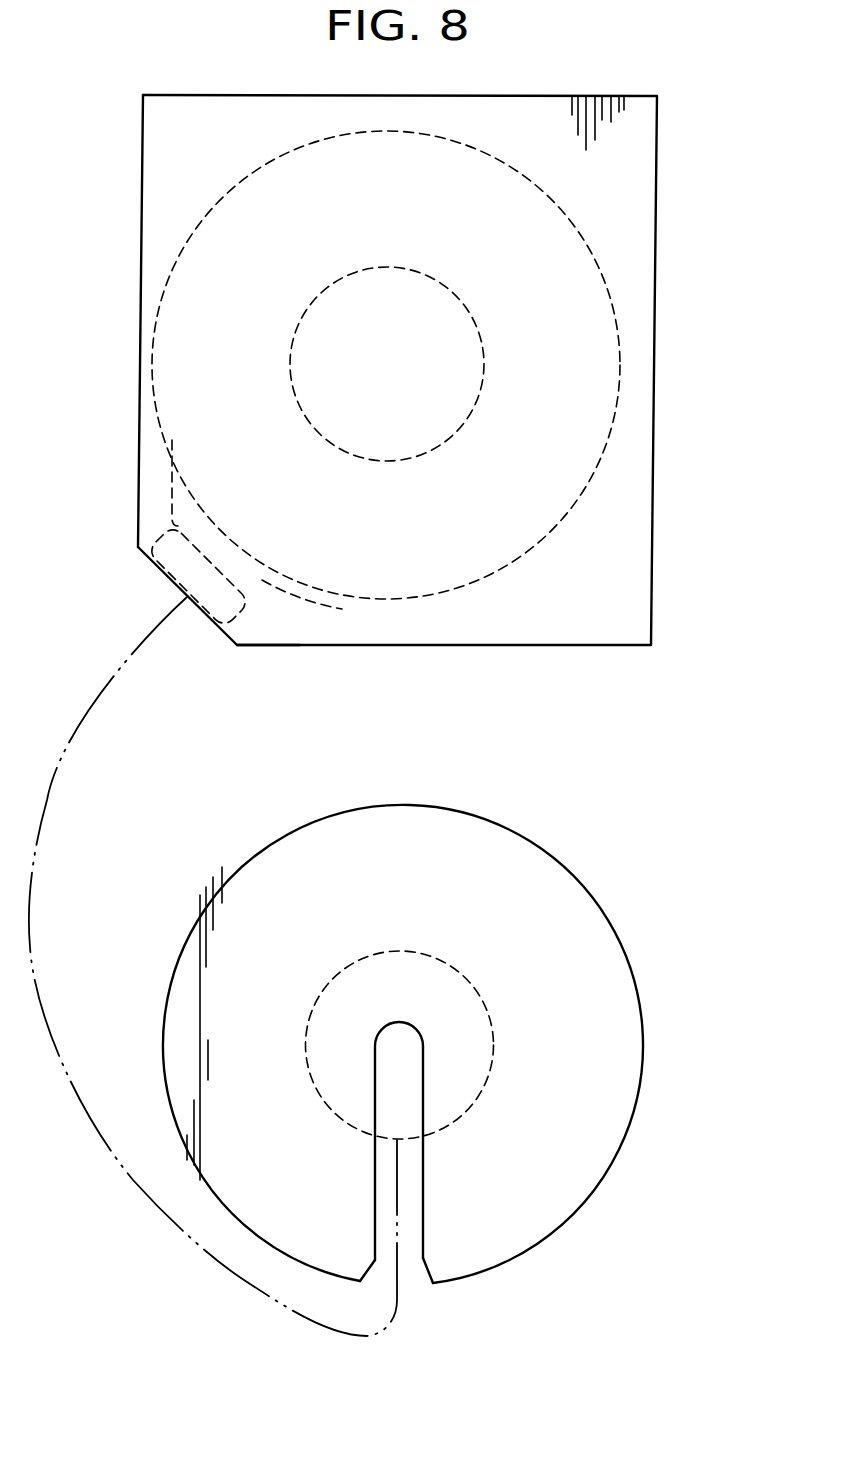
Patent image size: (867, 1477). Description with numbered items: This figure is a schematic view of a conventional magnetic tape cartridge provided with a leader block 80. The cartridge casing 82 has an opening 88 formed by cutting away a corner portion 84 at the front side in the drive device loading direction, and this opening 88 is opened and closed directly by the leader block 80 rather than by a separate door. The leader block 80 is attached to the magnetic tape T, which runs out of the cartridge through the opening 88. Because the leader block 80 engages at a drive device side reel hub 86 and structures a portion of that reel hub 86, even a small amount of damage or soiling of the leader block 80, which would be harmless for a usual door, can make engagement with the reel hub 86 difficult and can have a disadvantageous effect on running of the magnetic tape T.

The leader block 80 is at (229, 540).
The cartridge housing 82 is at (657, 243).
The corner portion 84 is at (148, 553).
The reel hub 86 is at (437, 957).
The opening 88 is at (232, 641).
The magnetic tape T is at (47, 798).